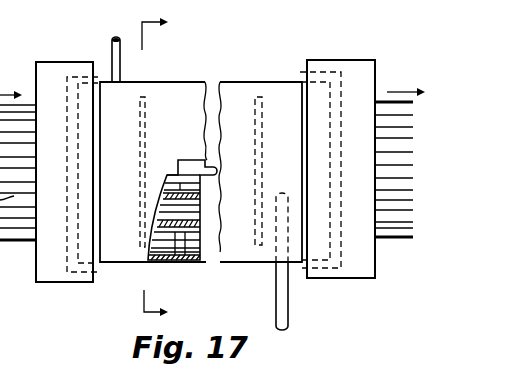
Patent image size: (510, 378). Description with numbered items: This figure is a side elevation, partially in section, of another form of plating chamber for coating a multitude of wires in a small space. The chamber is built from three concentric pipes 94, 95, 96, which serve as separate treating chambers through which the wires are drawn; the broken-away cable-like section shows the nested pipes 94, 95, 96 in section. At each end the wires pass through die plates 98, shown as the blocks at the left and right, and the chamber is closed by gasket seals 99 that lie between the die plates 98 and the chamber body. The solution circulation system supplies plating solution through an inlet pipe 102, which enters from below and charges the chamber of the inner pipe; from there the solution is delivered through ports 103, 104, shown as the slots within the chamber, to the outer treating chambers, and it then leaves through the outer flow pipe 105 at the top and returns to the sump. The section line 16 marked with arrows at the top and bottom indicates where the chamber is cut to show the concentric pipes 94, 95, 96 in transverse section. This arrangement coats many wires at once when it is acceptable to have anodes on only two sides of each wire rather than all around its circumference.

The section line 16- 16 is at (170, 169).
The concentric pipe 94 is at (160, 262).
The concentric pipe 95 is at (180, 262).
The concentric pipe 96 is at (195, 262).
The die plate 98 is at (67, 62).
The gasket seal 99 is at (100, 80).
The inlet pipe 102 is at (288, 300).
The port 103 is at (260, 127).
The port 104 is at (140, 205).
The outer flow pipe 105 is at (122, 65).